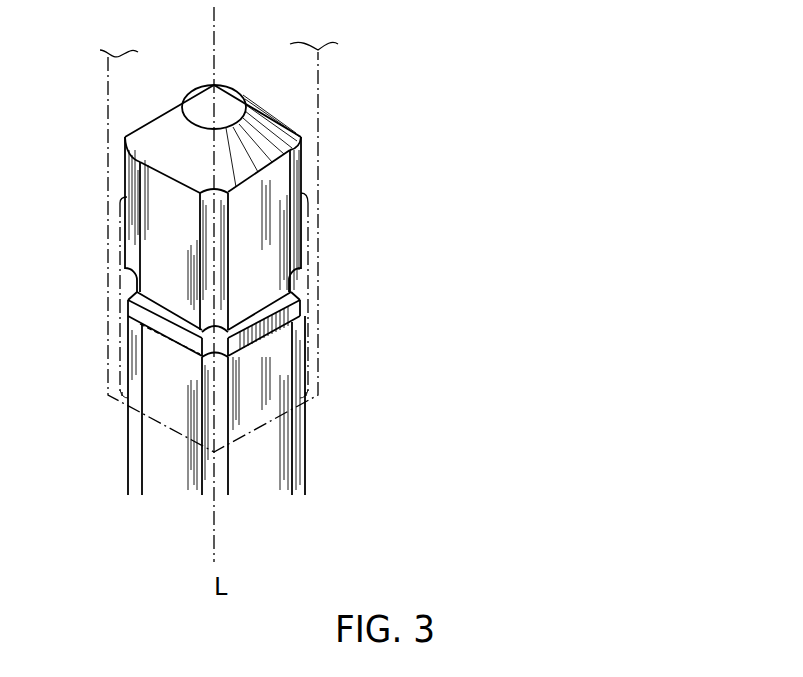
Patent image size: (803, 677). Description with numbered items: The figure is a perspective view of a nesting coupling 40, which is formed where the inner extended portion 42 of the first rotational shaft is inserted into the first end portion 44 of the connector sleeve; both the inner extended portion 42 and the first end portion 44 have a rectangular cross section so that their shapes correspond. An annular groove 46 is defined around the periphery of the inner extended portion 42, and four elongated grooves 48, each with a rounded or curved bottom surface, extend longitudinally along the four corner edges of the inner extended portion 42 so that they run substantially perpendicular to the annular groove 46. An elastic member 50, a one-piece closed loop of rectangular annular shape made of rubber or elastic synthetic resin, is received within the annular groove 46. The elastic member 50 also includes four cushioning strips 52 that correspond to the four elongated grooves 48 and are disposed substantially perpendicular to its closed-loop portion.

The nesting coupling 40 is at (352, 103).
The inner extended portion 42 is at (170, 463).
The first end portion 44 is at (117, 85).
The annular groove 46 is at (178, 322).
The elongated groove 48 is at (302, 178).
The elastic member 50 is at (280, 343).
The cushioning strip 52 is at (205, 243).